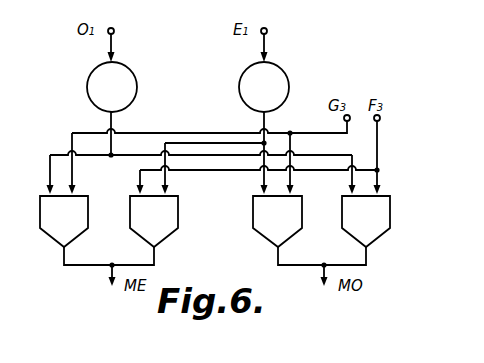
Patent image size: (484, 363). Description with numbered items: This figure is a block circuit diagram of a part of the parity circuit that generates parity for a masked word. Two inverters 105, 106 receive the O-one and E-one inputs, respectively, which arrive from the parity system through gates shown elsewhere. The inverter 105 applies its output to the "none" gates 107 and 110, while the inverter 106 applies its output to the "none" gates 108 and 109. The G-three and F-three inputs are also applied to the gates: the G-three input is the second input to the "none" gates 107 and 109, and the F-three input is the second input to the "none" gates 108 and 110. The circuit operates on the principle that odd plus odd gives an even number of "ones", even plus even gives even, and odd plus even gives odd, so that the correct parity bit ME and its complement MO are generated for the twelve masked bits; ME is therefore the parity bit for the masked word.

The inverter 105 is at (136, 94).
The inverter 106 is at (288, 94).
The "none" gate 107 is at (62, 248).
The "none" gate 108 is at (152, 248).
The "none" gate 109 is at (276, 248).
The "none" gate 110 is at (364, 248).